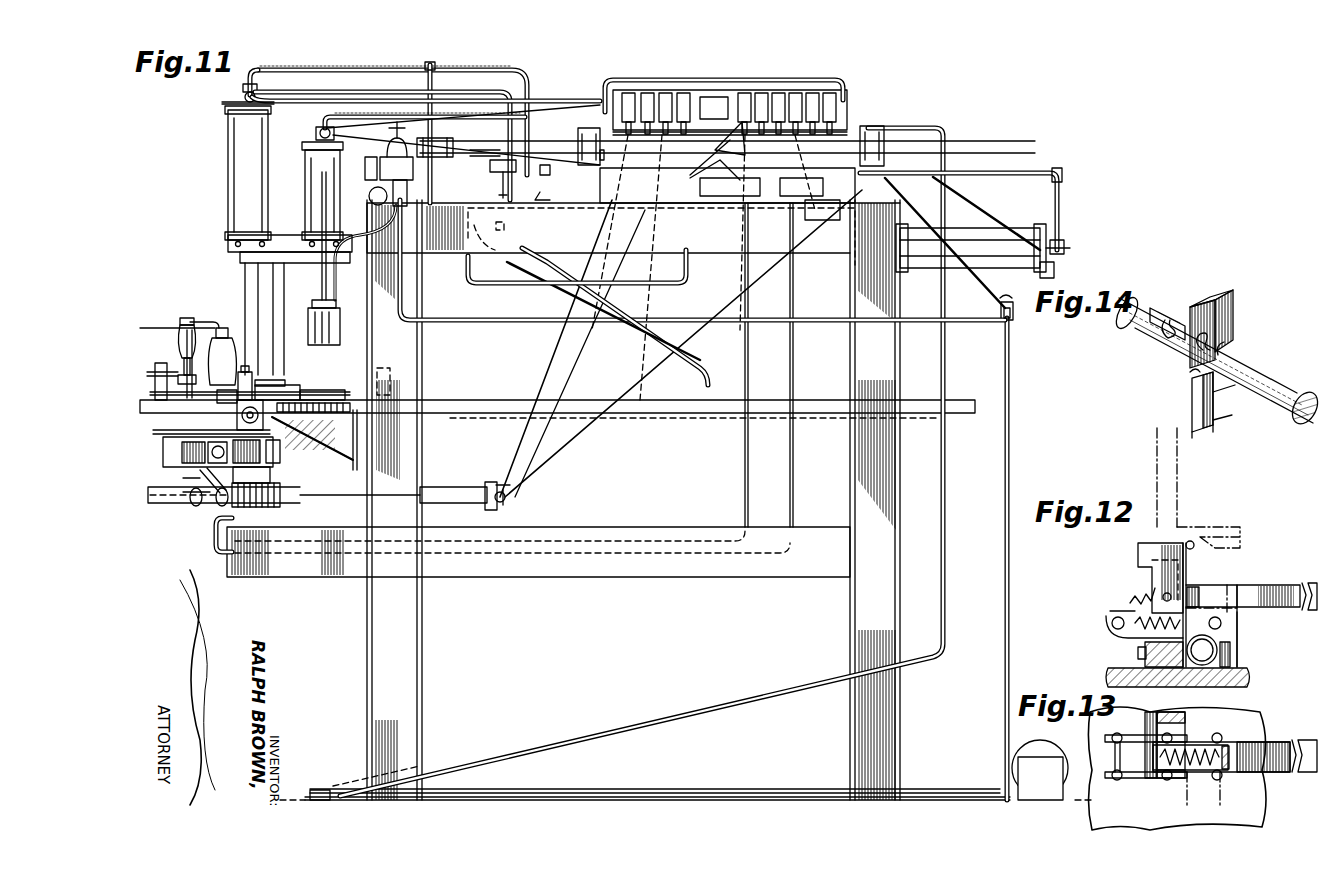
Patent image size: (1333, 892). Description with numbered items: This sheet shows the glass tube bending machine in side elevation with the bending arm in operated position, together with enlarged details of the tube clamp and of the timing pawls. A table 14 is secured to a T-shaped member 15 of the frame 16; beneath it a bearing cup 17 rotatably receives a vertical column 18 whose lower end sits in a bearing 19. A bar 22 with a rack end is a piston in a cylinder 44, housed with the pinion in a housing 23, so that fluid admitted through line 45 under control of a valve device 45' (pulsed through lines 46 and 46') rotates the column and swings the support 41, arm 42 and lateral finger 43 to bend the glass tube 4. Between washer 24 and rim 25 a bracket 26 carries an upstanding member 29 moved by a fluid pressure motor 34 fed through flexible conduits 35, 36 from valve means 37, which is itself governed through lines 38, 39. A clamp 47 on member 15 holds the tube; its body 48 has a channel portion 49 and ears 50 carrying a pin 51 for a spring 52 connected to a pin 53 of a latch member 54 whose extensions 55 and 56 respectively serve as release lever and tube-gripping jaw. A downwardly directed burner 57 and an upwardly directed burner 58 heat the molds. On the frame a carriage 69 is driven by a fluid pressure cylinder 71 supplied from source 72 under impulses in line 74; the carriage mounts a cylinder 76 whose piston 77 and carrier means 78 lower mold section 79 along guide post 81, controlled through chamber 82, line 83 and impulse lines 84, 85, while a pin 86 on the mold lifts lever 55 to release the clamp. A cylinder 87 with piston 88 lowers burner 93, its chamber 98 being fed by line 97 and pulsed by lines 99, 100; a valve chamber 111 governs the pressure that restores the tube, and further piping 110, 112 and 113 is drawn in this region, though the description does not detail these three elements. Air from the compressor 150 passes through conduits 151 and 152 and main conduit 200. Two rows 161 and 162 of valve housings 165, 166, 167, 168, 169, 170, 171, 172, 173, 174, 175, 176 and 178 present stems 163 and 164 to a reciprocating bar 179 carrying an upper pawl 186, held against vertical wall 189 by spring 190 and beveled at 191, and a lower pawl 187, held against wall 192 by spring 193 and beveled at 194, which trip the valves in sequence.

In FIG. 11, the glass tube 4 is at (498, 396).
In FIG. 12, the glass tube 4 is at (1222, 635).
In FIG. 13, the glass tube 4 is at (1232, 808).
In FIG. 11, the table 14 is at (152, 396).
In FIG. 11, the T-shaped member 15 is at (985, 216).
In FIG. 11, the frame 16 is at (364, 630).
In FIG. 11, the bearing cup 17 is at (232, 422).
In FIG. 11, the vertical column 18 is at (290, 455).
In FIG. 11, the bearing 19 is at (215, 535).
In FIG. 11, the bar 22 is at (150, 506).
In FIG. 11, the housing 23 is at (172, 504).
In FIG. 11, the washer 24 is at (270, 478).
In FIG. 11, the rim 25 is at (278, 445).
In FIG. 11, the bracket 26 is at (162, 455).
In FIG. 11, the upstanding member 29 is at (156, 423).
In FIG. 11, the fluid pressure motor 34 is at (198, 470).
In FIG. 11, the flexible conduit 35 is at (192, 505).
In FIG. 11, the flexible conduit 36 is at (218, 507).
In FIG. 11, the valve means 37 is at (270, 551).
In FIG. 11, the line 38 is at (792, 478).
In FIG. 11, the line 39 is at (744, 490).
In FIG. 11, the radially adjustable support 41 is at (207, 396).
In FIG. 11, the arm 42 is at (282, 380).
In FIG. 12, the lateral finger 43 is at (1146, 670).
In FIG. 13, the lateral finger 43 is at (1178, 712).
In FIG. 11, the cylinder 44 is at (445, 485).
In FIG. 11, the line 45 is at (683, 343).
In FIG. 11, the valve device 45' is at (498, 478).
In FIG. 11, the line 46 is at (556, 348).
In FIG. 11, the line 46' is at (580, 353).
In FIG. 11, the clamp 47 is at (258, 380).
In FIG. 12, the clamp 47 is at (1136, 578).
In FIG. 12, the body 48 is at (1144, 650).
In FIG. 13, the body 48 is at (1148, 720).
In FIG. 12, the upstanding channel portion 49 is at (1182, 575).
In FIG. 13, the upstanding channel portion 49 is at (1160, 778).
In FIG. 12, the ears 50 is at (1110, 620).
In FIG. 13, the ears 50 is at (1105, 738).
In FIG. 12, the horizontal pin 51 is at (1130, 612).
In FIG. 13, the horizontal pin 51 is at (1112, 757).
In FIG. 12, the spring 52 is at (1196, 625).
In FIG. 13, the spring 52 is at (1192, 770).
In FIG. 11, the pin 53 is at (322, 790).
In FIG. 12, the pin 53 is at (1222, 622).
In FIG. 13, the pin 53 is at (1233, 728).
In FIG. 12, the latch member 54 is at (1205, 593).
In FIG. 11, the extension 55 is at (292, 400).
In FIG. 12, the extension 55 is at (1262, 578).
In FIG. 13, the extension 55 is at (1272, 735).
In FIG. 12, the extension 56 is at (1232, 655).
In FIG. 11, the downwardly directed burner 57 is at (220, 360).
In FIG. 11, the upwardly directed burner 58 is at (176, 345).
In FIG. 11, the carriage 69 is at (450, 258).
In FIG. 11, the fluid pressure cylinder 71 is at (995, 268).
In FIG. 11, the source 72 is at (1062, 210).
In FIG. 11, the line 74 is at (830, 222).
In FIG. 11, the cylinder 76 is at (228, 148).
In FIG. 11, the piston 77 is at (244, 276).
In FIG. 11, the carrier means 78 is at (290, 385).
In FIG. 11, the mold section 79 is at (320, 400).
In FIG. 11, the guide post 81 is at (284, 280).
In FIG. 11, the chamber 82 is at (243, 91).
In FIG. 11, the line 83 is at (333, 70).
In FIG. 11, the line 84 is at (355, 102).
In FIG. 11, the line 85 is at (296, 108).
In FIG. 11, the pin 86 is at (262, 422).
In FIG. 11, the cylinder 87 is at (304, 160).
In FIG. 11, the piston 88 is at (338, 275).
In FIG. 11, the burner 93 is at (348, 314).
In FIG. 11, the line 97 is at (375, 112).
In FIG. 11, the valve chamber 98 is at (316, 137).
In FIG. 11, the line 99 is at (368, 150).
In FIG. 11, the line 100 is at (552, 112).
In FIG. 11, the hose 110 is at (650, 330).
In FIG. 11, the valve chamber 111 is at (498, 238).
In FIG. 11, the pipe 112 is at (500, 288).
In FIG. 11, the hose 113 is at (580, 218).
In FIG. 11, the compressor 150 is at (1040, 770).
In FIG. 11, the conduit 151 is at (745, 790).
In FIG. 11, the conduit 152 is at (740, 690).
In FIG. 11, the upper row of valve housings 161 is at (840, 110).
In FIG. 11, the lower row of valve housings 162 is at (612, 188).
In FIG. 11, the valve stems 163 is at (848, 128).
In FIG. 11, the valve stems 164 is at (885, 176).
In FIG. 11, the housing 165 is at (625, 200).
In FIG. 11, the housing 166 is at (650, 200).
In FIG. 11, the housing 167 is at (829, 92).
In FIG. 11, the housing 168 is at (812, 92).
In FIG. 11, the housing 169 is at (795, 92).
In FIG. 11, the housing 170 is at (778, 92).
In FIG. 11, the housing 171 is at (761, 92).
In FIG. 11, the housing 172 is at (744, 92).
In FIG. 11, the housing 173 is at (684, 92).
In FIG. 11, the housing 174 is at (665, 92).
In FIG. 11, the housing 175 is at (647, 92).
In FIG. 11, the housing 176 is at (628, 92).
In FIG. 11, the housing 178 is at (830, 208).
In FIG. 11, the bar 179 is at (905, 138).
In FIG. 14, the bar 179 is at (1265, 398).
In FIG. 11, the upper pawl 186 is at (724, 136).
In FIG. 14, the upper pawl 186 is at (1220, 312).
In FIG. 11, the lower pawl 187 is at (718, 170).
In FIG. 14, the lower pawl 187 is at (1222, 420).
In FIG. 14, the vertical wall 189 is at (1228, 360).
In FIG. 14, the spring 190 is at (1178, 345).
In FIG. 14, the beveled edge 191 is at (1186, 306).
In FIG. 14, the vertical wall 192 is at (1190, 375).
In FIG. 14, the spring 193 is at (1194, 395).
In FIG. 14, the bevel 194 is at (1204, 432).
In FIG. 11, the conduit 200 is at (1012, 575).